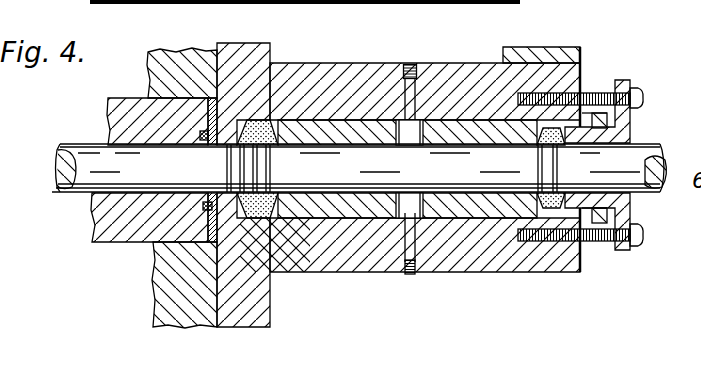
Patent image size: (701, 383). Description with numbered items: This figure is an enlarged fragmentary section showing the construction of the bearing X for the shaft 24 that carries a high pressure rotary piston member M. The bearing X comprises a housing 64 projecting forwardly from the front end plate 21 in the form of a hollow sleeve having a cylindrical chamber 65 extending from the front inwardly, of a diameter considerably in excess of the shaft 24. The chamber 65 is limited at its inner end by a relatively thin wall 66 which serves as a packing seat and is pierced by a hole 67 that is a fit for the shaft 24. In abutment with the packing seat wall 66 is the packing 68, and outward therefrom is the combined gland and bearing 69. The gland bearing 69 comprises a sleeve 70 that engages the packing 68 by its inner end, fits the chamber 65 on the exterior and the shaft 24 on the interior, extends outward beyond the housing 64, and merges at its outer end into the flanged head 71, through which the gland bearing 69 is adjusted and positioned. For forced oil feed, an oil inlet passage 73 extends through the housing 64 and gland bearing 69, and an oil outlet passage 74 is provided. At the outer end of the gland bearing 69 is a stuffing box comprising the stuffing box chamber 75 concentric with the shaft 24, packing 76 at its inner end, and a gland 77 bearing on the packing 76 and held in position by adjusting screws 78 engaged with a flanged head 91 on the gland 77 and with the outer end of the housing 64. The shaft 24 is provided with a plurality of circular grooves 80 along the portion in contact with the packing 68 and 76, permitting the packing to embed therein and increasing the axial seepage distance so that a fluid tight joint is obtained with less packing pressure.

The front end plate 21 is at (230, 43).
The shaft 24 is at (358, 154).
The housing 64 is at (386, 65).
The cylindrical chamber 65 is at (447, 68).
The wall 66 is at (275, 274).
The hole 67 is at (226, 150).
The packing 68 is at (314, 272).
The gland bearing 69 is at (460, 208).
The sleeve 70 is at (377, 212).
The flanged head 71 is at (604, 217).
The oil inlet passage 73 is at (410, 66).
The oil outlet passage 74 is at (415, 272).
The stuffing box chamber 75 is at (582, 228).
The packing 76 is at (507, 120).
The gland 77 is at (628, 137).
The adjusting screws 78 is at (600, 94).
The circular grooves 80 is at (300, 128).
The flanged head 91 is at (628, 81).
The high pressure rotary piston member M is at (110, 91).
The bearing X is at (330, 63).